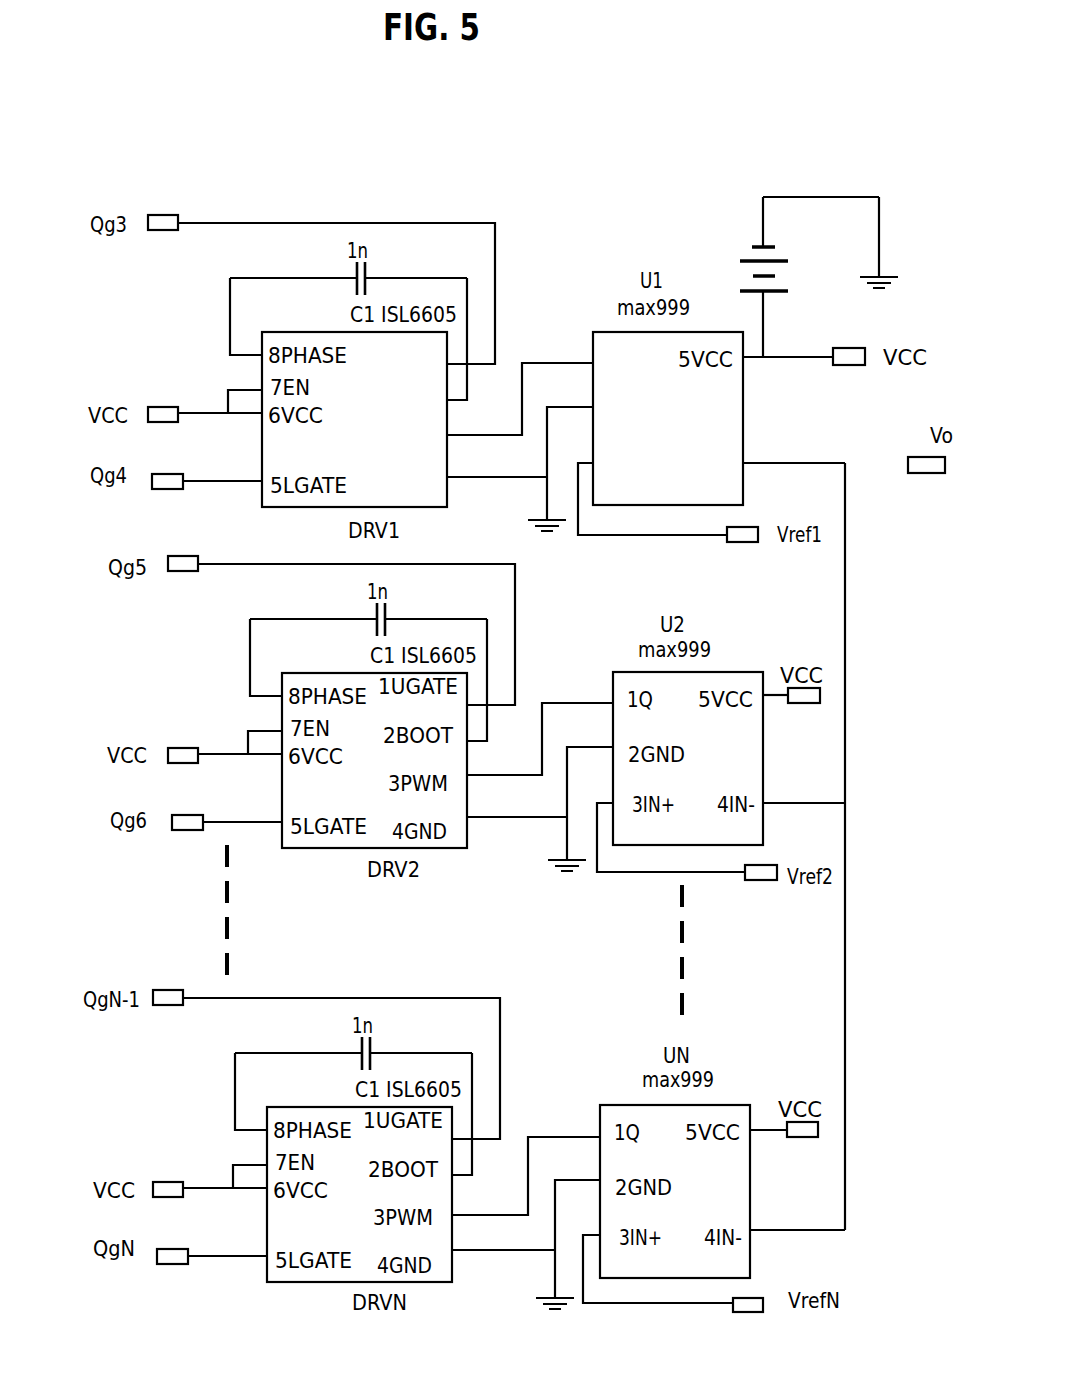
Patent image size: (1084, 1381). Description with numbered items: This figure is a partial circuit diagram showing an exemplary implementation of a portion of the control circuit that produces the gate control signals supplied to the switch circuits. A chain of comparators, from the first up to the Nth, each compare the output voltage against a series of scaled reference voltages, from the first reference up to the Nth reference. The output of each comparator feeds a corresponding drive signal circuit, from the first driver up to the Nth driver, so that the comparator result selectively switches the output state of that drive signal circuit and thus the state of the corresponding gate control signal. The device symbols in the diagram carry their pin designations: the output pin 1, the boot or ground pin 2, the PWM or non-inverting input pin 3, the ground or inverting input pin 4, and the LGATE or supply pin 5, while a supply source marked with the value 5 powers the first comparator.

The UGATE / Q output pin 1 is at (495, 384).
The BOOT / GND pin 2 is at (514, 456).
The PWM / IN+ pin 3 is at (563, 486).
The GND / IN- pin 4 is at (658, 841).
The voltage source V1 5 is at (819, 277).